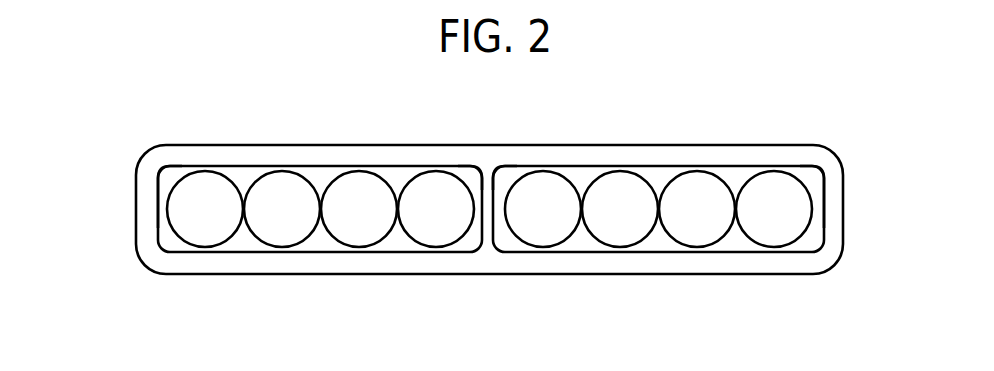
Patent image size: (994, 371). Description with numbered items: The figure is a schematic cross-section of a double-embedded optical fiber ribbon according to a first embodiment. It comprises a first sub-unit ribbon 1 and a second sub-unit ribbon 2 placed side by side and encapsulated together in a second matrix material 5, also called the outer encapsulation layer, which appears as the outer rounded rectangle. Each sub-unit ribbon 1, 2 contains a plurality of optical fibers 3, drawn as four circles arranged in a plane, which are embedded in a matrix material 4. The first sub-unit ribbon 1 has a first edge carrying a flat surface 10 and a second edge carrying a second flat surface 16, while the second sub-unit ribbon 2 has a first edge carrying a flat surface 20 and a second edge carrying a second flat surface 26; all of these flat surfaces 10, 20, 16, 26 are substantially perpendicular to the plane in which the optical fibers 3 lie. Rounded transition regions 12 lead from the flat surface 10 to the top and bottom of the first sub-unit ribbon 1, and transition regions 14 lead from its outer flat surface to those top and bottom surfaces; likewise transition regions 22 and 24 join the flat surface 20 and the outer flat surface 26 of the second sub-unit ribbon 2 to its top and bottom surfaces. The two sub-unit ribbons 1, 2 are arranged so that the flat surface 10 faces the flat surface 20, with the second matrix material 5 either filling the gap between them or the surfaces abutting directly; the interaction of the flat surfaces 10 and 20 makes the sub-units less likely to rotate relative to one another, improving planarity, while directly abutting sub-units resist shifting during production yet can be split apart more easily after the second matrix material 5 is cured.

The first sub-unit ribbon 1 is at (284, 215).
The second sub-unit ribbon 2 is at (703, 215).
The optical fibers 3 is at (208, 185).
The matrix material 4 is at (250, 172).
The second matrix material 5 is at (768, 150).
The flat surface 10 is at (473, 215).
The transition regions 12 is at (482, 175).
The transition regions 14 is at (170, 166).
The second flat surface 16 is at (158, 212).
The flat surface 20 is at (497, 217).
The transition regions 22 is at (502, 172).
The transition regions 24 is at (818, 167).
The second flat surface 26 is at (822, 202).